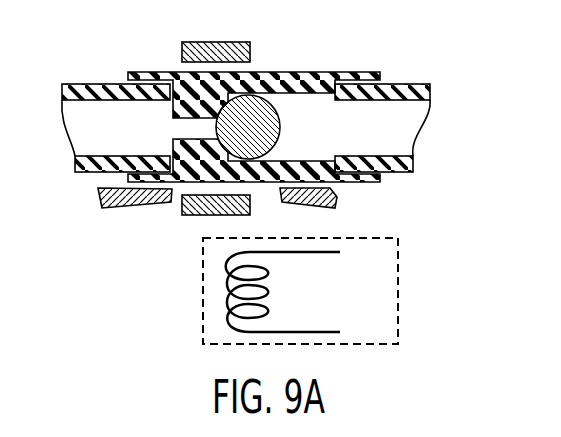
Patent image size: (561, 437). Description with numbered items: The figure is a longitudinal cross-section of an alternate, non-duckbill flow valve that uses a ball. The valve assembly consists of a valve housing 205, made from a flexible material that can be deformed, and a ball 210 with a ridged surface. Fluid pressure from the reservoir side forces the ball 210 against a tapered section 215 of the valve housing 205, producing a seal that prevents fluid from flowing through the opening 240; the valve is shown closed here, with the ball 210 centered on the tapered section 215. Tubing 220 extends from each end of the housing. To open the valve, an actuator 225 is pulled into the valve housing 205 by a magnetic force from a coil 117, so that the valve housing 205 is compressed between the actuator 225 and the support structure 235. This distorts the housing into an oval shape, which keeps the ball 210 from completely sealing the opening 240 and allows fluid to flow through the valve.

The coil 117 is at (203, 263).
The valve housing 205 is at (254, 103).
The ball 210 is at (278, 131).
The tapered section 215 is at (270, 88).
The tube 220 is at (75, 85).
The actuator 225 is at (217, 43).
The support structure 235 is at (100, 208).
The opening 240 is at (186, 122).